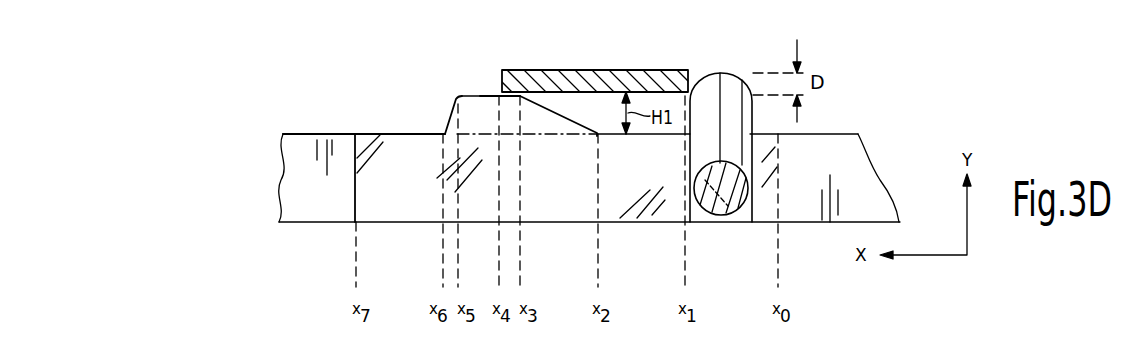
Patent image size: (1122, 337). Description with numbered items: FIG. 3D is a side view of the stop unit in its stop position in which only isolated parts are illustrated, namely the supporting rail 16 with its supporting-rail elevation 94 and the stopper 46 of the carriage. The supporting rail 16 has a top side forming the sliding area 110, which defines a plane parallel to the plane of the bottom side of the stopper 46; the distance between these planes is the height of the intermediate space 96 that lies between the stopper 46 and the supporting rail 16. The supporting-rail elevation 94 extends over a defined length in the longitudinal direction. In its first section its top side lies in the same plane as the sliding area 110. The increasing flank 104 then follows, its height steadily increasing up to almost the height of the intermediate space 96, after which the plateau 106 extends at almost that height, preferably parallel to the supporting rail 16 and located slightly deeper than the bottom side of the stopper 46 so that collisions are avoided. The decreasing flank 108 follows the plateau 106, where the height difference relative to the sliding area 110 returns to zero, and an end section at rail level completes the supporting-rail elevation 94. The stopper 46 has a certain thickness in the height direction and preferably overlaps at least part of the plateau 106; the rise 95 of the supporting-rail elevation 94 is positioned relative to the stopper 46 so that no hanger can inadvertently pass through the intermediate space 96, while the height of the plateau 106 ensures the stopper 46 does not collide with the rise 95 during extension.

The supporting rail 16 is at (868, 152).
The stopper 46 is at (643, 70).
The supporting-rail elevation 94 is at (397, 133).
The rise 95 is at (477, 93).
The intermediate space 96 is at (598, 108).
The increasing flank 104 is at (545, 110).
The plateau 106 is at (483, 92).
The decreasing flank 108 is at (447, 125).
The sliding area 110 is at (310, 120).